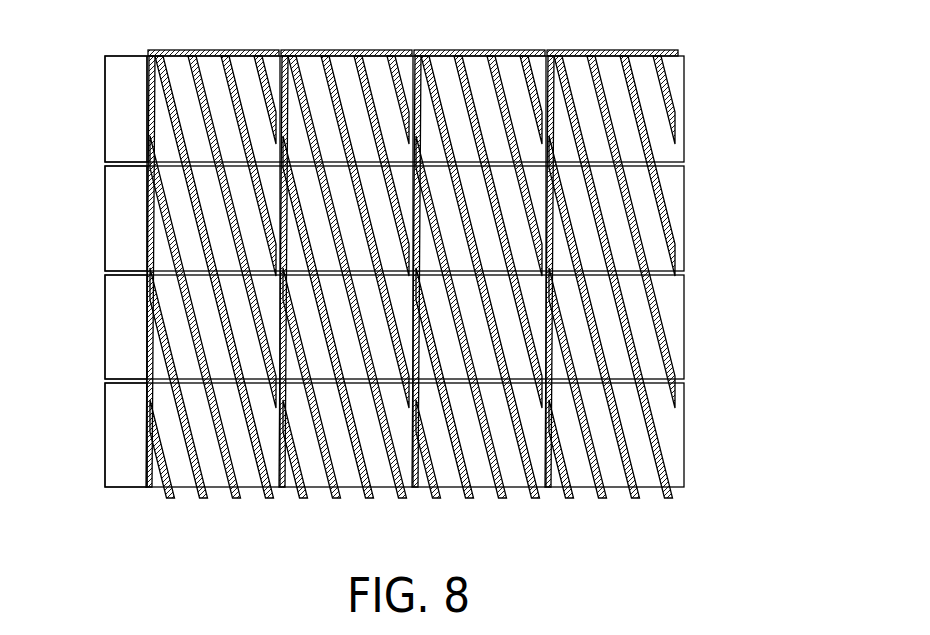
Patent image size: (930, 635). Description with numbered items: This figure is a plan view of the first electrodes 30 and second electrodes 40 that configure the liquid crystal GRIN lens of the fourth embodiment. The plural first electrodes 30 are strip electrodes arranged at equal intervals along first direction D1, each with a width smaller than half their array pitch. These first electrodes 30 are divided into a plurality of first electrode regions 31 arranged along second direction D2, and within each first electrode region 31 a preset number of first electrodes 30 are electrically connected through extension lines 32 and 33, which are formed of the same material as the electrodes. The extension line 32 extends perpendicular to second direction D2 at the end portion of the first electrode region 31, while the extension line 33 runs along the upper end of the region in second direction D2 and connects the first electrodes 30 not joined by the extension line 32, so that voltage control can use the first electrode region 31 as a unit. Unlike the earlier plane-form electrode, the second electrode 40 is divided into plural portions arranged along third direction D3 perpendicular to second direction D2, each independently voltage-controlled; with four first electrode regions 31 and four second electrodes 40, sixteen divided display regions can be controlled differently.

The first electrode 30 is at (673, 488).
The first electrode region 31 is at (408, 507).
The extension line 32 is at (555, 488).
The extension line 33 is at (608, 50).
The second electrode 40 is at (105, 108).
The first direction D1 is at (567, 267).
The second direction D2 is at (55, 527).
The third direction D3 is at (55, 527).